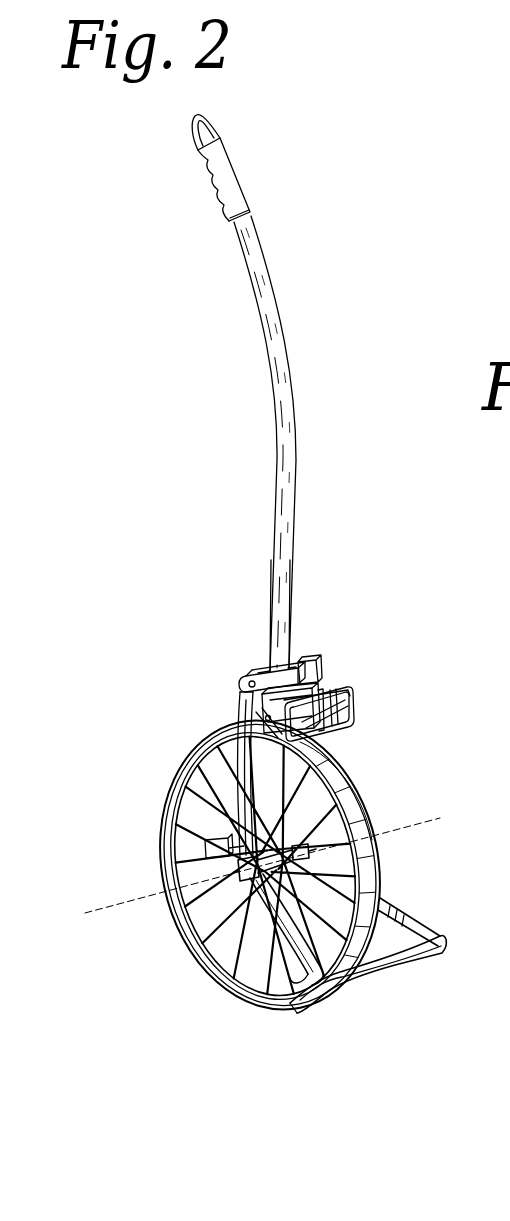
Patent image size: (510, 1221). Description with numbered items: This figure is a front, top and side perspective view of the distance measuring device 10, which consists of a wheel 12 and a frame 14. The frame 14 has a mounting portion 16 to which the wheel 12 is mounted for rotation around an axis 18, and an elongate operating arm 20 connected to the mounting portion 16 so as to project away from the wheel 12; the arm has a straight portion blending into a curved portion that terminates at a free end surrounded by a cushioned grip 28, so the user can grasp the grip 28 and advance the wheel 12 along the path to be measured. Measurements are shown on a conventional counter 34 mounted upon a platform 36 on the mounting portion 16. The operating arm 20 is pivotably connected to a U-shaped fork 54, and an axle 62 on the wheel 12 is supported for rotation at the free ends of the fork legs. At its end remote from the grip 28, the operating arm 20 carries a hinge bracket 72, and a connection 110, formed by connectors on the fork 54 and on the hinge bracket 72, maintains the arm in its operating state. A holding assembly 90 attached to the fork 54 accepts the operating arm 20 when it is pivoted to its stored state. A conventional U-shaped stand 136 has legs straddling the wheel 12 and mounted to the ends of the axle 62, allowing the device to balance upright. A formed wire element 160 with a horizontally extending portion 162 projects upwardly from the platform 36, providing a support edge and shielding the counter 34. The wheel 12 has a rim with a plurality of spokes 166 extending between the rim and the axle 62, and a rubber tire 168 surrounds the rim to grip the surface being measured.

The distance measuring device 10 is at (304, 512).
The wheel 12 is at (256, 984).
The frame 14 is at (294, 602).
The mounting portion 16 is at (237, 722).
The axis 18 is at (445, 816).
The elongate operating arm 20 is at (288, 398).
The cushioned grip 28 is at (232, 190).
The counter 34 is at (299, 657).
The platform 36 is at (355, 699).
The U-shaped fork 54 is at (240, 806).
The axle 62 is at (340, 883).
The hinge bracket 72 is at (247, 673).
The holding assembly 90 is at (275, 830).
The connection 110 is at (325, 674).
The U-shaped stand 136 is at (388, 958).
The formed wire element 160 is at (353, 707).
The horizontally extending portion 162 is at (342, 689).
The spokes 166 is at (383, 904).
The rubber tire 168 is at (355, 816).